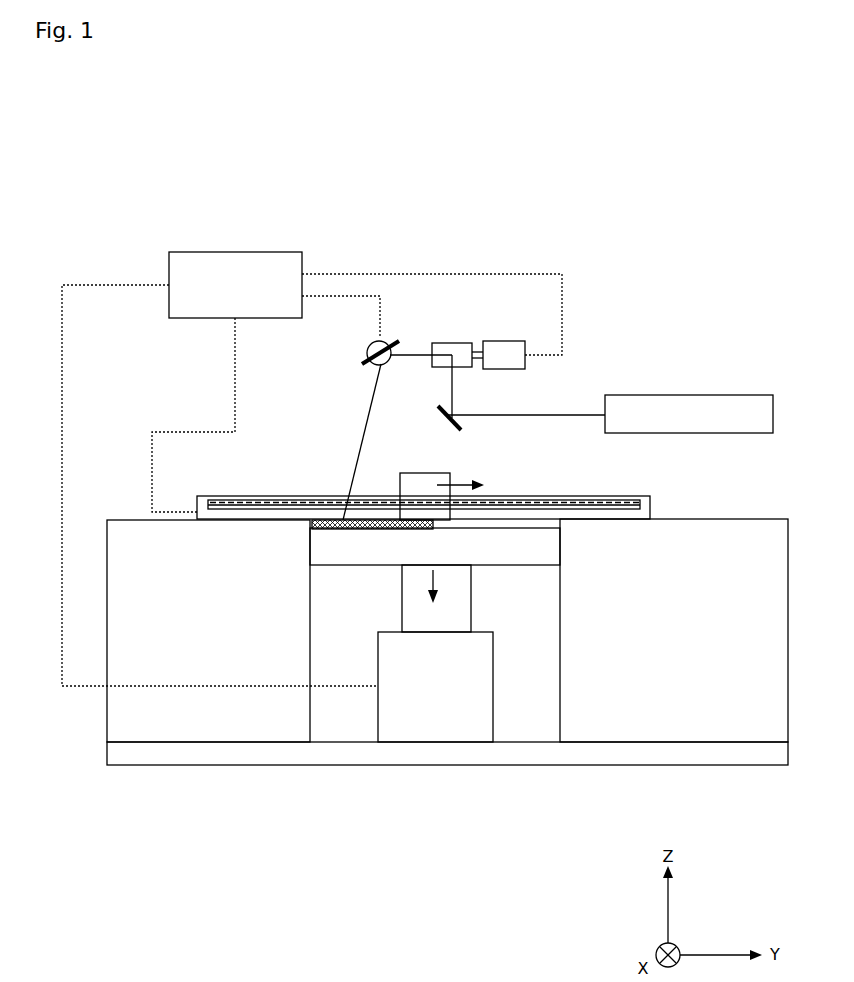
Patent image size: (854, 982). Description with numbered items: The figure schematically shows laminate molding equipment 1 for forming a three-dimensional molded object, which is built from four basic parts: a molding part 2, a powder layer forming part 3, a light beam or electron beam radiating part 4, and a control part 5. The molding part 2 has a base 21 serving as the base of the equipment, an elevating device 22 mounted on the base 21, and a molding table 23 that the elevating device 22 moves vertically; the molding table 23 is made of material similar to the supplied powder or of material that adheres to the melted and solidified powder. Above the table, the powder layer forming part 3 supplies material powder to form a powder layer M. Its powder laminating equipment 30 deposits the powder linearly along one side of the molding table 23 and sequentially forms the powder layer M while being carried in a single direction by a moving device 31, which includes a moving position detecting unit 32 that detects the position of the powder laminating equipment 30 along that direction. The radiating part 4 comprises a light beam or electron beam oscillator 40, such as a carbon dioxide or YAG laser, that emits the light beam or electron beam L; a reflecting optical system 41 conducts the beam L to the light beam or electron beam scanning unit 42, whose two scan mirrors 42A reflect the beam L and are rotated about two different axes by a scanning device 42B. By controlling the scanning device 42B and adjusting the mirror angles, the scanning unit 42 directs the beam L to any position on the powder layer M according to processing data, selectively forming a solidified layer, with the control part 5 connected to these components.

The laminate molding equipment 1 is at (652, 206).
The molding part 2 is at (447, 694).
The base 21 is at (505, 765).
The elevating device 22 is at (433, 713).
The molding table 23 is at (497, 565).
The powder layer forming part 3 is at (423, 470).
The powder laminating equipment 30 is at (457, 484).
The moving device 31 is at (517, 499).
The moving position detecting unit 32 is at (552, 501).
The light beam or electron beam radiating part 4 is at (568, 325).
The light beam or electron beam oscillator 40 is at (725, 395).
The reflecting optical system 41 is at (447, 420).
The light beam or electron beam scanning unit 42 is at (443, 280).
The scan mirrors 42A is at (453, 343).
The scanning device 42B is at (397, 345).
The control part 5 is at (252, 252).
The light beam or electron beam L is at (366, 414).
The powder layer M is at (319, 516).